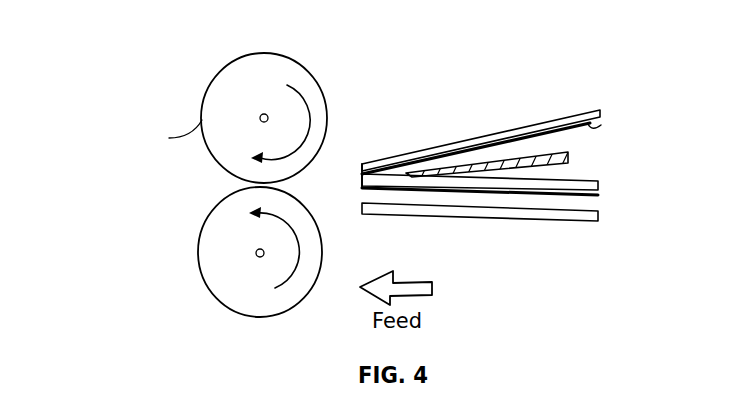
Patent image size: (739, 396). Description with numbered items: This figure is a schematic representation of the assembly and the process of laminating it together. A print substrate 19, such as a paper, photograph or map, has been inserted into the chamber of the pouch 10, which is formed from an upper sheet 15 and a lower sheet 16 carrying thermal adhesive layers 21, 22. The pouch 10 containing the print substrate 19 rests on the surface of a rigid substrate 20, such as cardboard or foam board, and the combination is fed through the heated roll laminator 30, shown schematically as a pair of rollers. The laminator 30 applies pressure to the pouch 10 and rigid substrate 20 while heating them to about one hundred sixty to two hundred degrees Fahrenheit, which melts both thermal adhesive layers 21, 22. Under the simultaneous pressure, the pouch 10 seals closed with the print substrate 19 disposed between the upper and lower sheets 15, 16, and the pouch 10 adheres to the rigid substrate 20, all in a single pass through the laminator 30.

The pouch 10 is at (519, 157).
The upper sheet 15 is at (525, 126).
The lower sheet 16 is at (584, 180).
The print substrate 19 is at (570, 157).
The rigid substrate 20 is at (545, 221).
The thermal adhesive layer 21 is at (603, 124).
The thermal adhesive layer 22 is at (598, 196).
The heated roll laminator 30 is at (209, 59).